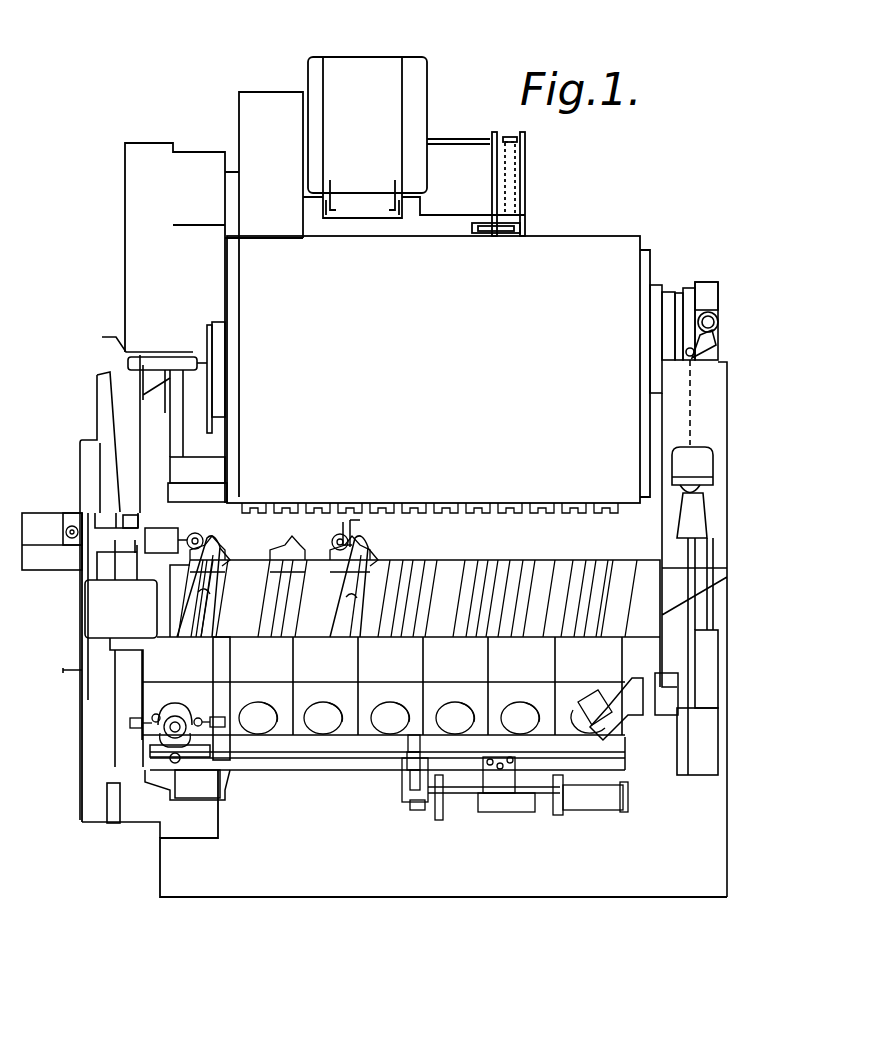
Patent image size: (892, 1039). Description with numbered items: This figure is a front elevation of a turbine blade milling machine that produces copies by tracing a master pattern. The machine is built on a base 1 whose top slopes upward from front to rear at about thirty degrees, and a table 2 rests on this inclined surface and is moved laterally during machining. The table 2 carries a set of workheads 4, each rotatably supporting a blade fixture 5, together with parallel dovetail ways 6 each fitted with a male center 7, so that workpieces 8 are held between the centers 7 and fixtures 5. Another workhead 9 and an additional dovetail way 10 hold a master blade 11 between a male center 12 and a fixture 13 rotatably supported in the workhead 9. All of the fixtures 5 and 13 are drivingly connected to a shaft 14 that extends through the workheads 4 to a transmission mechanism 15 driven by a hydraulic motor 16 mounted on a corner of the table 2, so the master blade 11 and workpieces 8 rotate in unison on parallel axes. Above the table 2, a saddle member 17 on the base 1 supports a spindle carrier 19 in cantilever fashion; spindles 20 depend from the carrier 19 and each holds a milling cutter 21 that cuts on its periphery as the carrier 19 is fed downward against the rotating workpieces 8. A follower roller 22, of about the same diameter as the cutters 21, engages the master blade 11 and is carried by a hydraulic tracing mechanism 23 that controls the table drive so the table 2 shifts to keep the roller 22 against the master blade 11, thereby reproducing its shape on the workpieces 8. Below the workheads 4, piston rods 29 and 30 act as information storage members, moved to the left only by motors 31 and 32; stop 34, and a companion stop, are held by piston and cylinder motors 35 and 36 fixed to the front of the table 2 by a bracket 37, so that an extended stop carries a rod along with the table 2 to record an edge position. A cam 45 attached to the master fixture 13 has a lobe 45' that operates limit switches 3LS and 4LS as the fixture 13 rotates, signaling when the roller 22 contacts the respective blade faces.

The base 1 is at (318, 864).
The table 2 is at (525, 557).
The workheads 4 is at (330, 665).
The limit switch 4LS is at (222, 718).
The limit switch 3LS is at (130, 727).
The blade fixture 5 is at (318, 708).
The dovetail ways 6 is at (470, 578).
The male center 7 is at (370, 556).
The workpieces 8 is at (357, 597).
The workhead 9 is at (180, 665).
The dovetail way 10 is at (210, 592).
The master blade 11 is at (208, 610).
The male center 12 is at (220, 557).
The fixture 13 is at (172, 704).
The shaft 14 is at (223, 685).
The transmission mechanism 15 is at (718, 682).
The hydraulic motor 16 is at (647, 716).
The saddle member 17 is at (207, 335).
The spindle carrier 19 is at (461, 367).
The spindles 20 is at (358, 523).
The milling cutter 21 is at (332, 545).
The follower roller 22 is at (200, 537).
The hydraulic tracing mechanism 23 is at (68, 572).
The piston rod 29 is at (470, 805).
The piston rod 30 is at (540, 812).
The motor 31 is at (598, 795).
The motor 32 is at (622, 812).
The stop 34 is at (414, 808).
The piston and cylinder motor 35 is at (421, 746).
The piston and cylinder motor 36 is at (407, 765).
The bracket 37 is at (402, 790).
The cam 45 is at (183, 715).
The lobe 45' is at (101, 721).